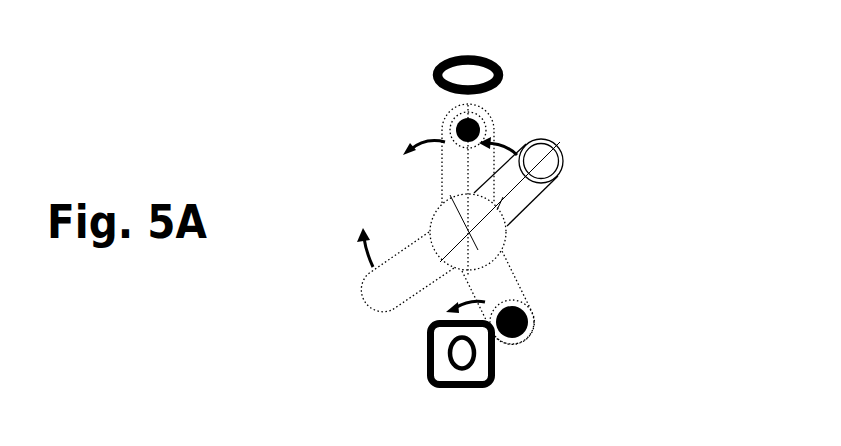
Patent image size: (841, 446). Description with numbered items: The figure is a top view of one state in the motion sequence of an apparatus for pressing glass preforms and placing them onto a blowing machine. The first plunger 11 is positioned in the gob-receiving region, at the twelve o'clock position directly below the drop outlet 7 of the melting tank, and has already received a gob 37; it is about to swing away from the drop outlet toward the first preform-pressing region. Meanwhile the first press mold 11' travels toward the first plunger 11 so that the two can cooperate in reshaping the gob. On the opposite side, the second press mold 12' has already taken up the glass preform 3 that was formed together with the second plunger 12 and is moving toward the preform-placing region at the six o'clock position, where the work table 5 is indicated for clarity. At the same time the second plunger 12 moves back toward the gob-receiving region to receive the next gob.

The glass preform 3 is at (530, 333).
The work table 5 is at (427, 374).
The drop outlet 7 is at (432, 70).
The first plunger 11 is at (411, 202).
The first press mold 11' is at (351, 283).
The second plunger 12 is at (603, 137).
The second press mold 12' is at (575, 297).
The gob 37 is at (477, 120).